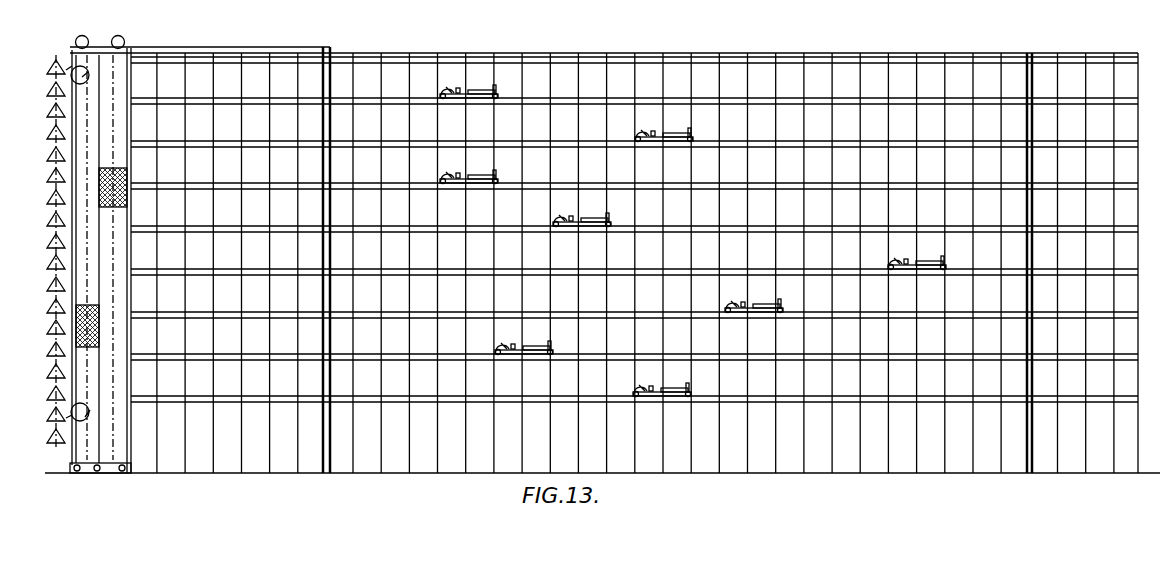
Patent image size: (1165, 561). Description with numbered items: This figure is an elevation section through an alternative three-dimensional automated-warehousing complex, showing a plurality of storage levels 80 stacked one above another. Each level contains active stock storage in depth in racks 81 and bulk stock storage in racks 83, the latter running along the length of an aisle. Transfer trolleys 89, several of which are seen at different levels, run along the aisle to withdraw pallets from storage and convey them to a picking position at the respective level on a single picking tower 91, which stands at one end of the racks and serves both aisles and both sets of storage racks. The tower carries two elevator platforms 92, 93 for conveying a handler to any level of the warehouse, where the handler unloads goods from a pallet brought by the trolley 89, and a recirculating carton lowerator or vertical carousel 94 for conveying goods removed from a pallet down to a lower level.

The storage levels 80 is at (1128, 100).
The active stock storage rack 81 is at (228, 82).
The bulk stock storage rack 83 is at (815, 86).
The transfer trolley 89 is at (446, 89).
The picking tower 91 is at (133, 72).
The elevator platform 92 is at (99, 318).
The elevator platform 93 is at (128, 200).
The recirculating carton lowerator 94 is at (48, 254).